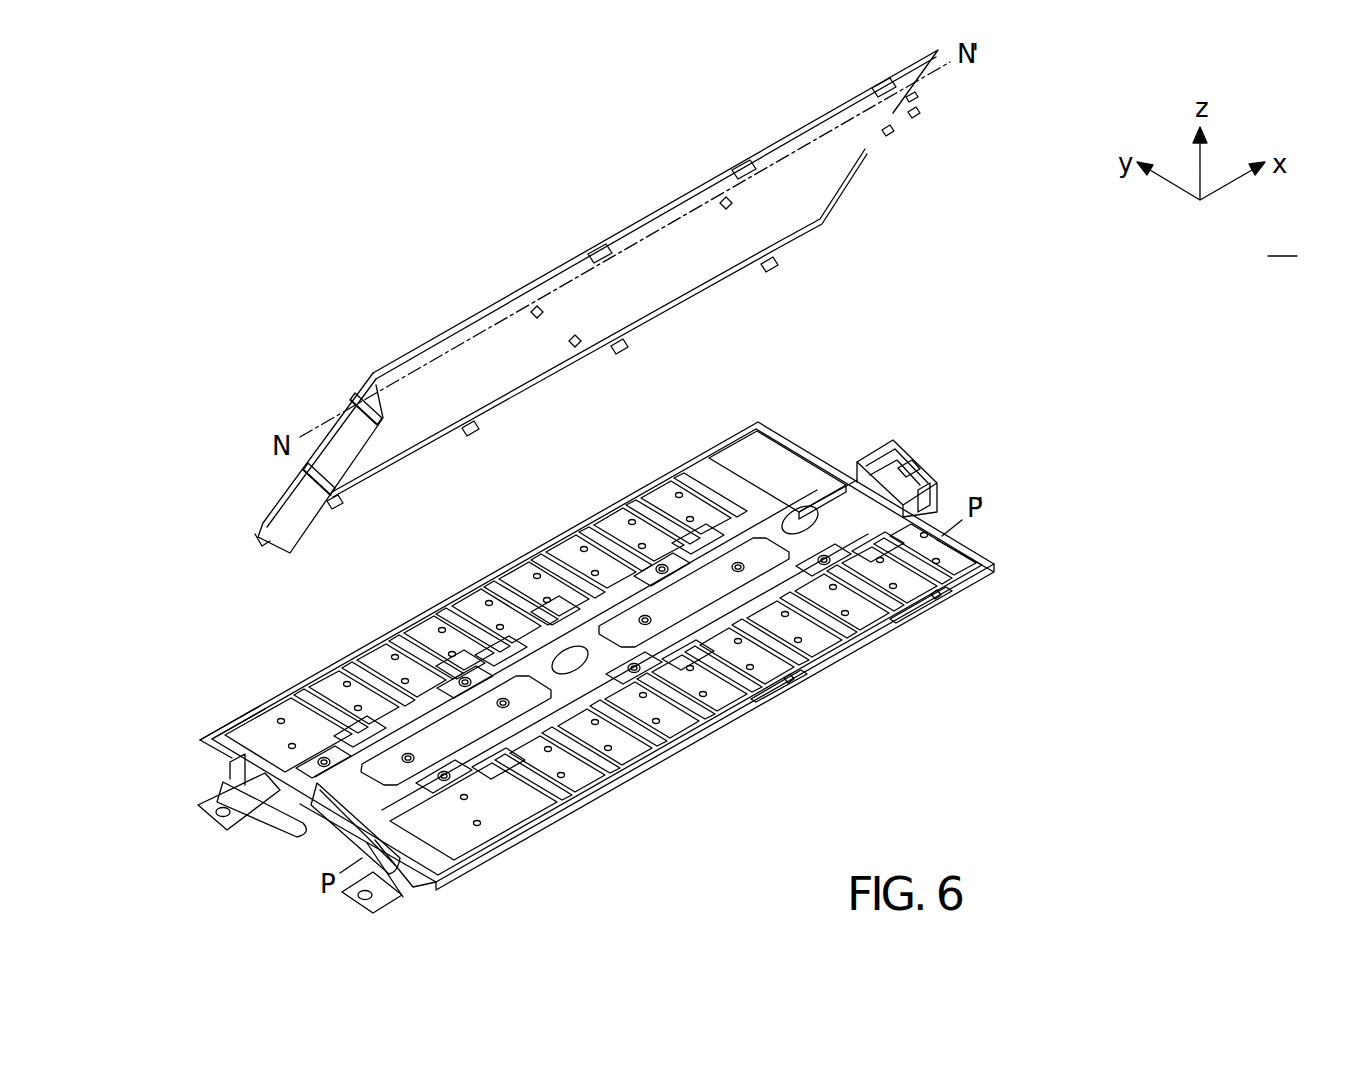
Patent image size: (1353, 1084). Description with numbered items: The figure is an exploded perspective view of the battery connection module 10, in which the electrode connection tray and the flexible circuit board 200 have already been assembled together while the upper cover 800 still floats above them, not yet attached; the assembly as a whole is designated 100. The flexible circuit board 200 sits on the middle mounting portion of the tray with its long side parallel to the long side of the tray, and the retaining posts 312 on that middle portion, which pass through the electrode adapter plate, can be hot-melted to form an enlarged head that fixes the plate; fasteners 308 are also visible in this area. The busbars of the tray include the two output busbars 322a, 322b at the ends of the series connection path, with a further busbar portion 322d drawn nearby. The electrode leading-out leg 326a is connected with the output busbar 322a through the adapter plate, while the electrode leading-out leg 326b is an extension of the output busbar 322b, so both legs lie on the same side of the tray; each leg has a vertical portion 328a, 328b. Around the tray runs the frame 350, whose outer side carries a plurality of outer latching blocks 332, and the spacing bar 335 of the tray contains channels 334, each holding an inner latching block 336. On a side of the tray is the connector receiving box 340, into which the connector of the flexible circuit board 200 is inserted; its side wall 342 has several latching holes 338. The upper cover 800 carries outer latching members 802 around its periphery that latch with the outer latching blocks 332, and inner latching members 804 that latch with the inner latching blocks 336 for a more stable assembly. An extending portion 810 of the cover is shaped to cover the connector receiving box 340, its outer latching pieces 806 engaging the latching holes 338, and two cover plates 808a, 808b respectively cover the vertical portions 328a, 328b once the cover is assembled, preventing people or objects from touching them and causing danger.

The battery connection module 10 is at (1282, 243).
The battery module 100 is at (1058, 493).
The flexible circuit board 200 is at (950, 500).
The fastening screw 308 is at (655, 560).
The retaining post 312 is at (740, 558).
The output busbar 322a is at (795, 455).
The output busbar 322b is at (215, 737).
The frame portion 322d is at (442, 853).
The electrode leading-out leg 326a is at (352, 912).
The electrode leading-out leg 326b is at (198, 812).
The vertical portion 328a is at (328, 850).
The vertical portion 328b is at (280, 822).
The outer latching block 332 is at (930, 593).
The channel 334 is at (495, 588).
The spacing bar 335 is at (478, 581).
The inner latching block 336 is at (540, 608).
The latching hole 338 is at (900, 462).
The connector receiving box 340 is at (858, 468).
The side wall 342 is at (906, 476).
The frame 350 is at (418, 893).
The upper cover 800 is at (1012, 75).
The outer latching member 802 is at (740, 162).
The inner latching member 804 is at (726, 210).
The outer latching piece 806 is at (920, 120).
The cover plate 808a is at (350, 445).
The cover plate 808b is at (287, 505).
The extending portion 810 is at (920, 103).